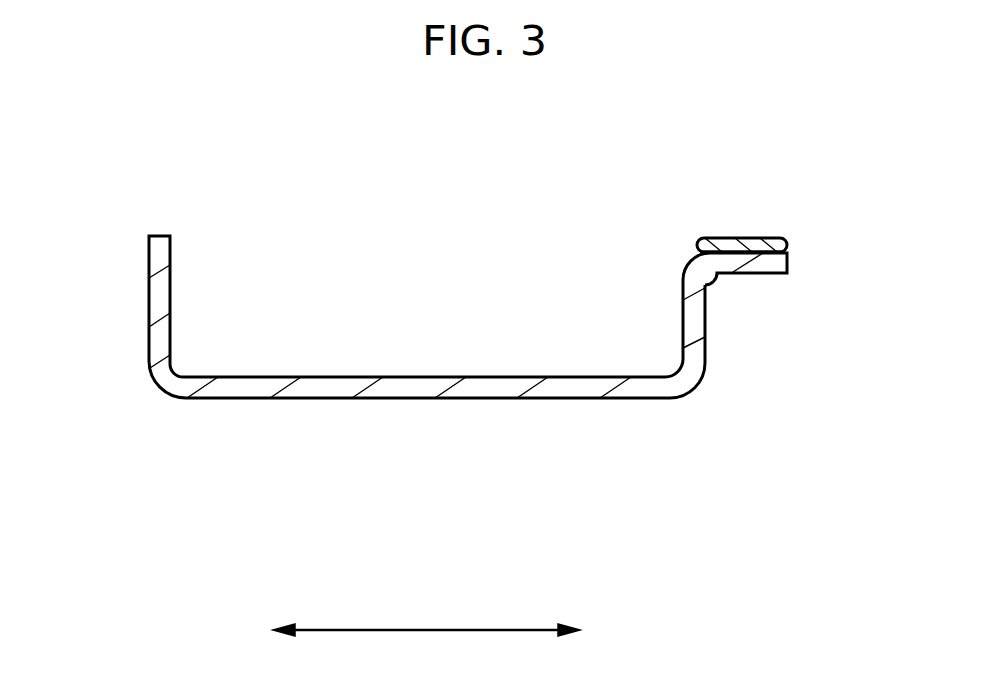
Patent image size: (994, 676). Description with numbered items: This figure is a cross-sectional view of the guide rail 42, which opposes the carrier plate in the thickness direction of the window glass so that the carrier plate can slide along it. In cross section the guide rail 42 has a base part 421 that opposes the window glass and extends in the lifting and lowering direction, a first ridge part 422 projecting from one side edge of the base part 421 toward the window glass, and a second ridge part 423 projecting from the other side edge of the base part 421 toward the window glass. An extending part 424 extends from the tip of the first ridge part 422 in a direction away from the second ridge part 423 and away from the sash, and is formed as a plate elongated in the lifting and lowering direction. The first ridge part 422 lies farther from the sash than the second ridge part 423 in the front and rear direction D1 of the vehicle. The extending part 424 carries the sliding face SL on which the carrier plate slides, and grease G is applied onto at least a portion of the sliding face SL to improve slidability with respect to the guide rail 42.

The guide rail 42 is at (268, 455).
The base part 421 is at (482, 388).
The first ridge part 422 is at (693, 320).
The second ridge part 423 is at (160, 295).
The extending part 424 is at (767, 262).
The grease G is at (727, 245).
The sliding face SL is at (760, 247).
The front and rear direction D1 is at (505, 628).